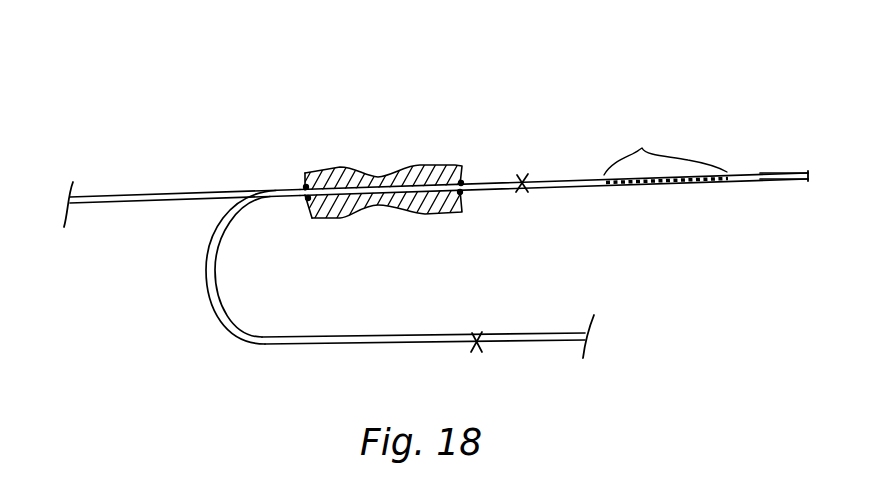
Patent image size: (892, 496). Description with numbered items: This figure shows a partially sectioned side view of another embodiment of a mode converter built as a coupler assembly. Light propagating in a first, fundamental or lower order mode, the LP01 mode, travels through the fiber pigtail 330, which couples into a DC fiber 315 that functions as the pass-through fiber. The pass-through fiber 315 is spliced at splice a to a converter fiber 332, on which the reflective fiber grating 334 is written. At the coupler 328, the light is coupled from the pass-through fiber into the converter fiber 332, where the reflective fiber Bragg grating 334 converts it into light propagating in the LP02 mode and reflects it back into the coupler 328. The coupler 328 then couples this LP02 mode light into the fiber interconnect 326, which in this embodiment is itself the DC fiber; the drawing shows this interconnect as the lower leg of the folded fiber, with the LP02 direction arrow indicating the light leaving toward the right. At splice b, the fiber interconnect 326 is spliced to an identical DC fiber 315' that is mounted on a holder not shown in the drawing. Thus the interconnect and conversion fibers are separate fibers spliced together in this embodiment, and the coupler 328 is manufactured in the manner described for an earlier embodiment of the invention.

The fiber pigtail 330 is at (144, 196).
The DC fiber 315 is at (507, 238).
The DC fiber 315' is at (573, 318).
The coupler 328 is at (377, 168).
The reflective fiber grating 334 is at (642, 148).
The converter fiber 332 is at (755, 181).
The fiber interconnect 326 is at (226, 340).
The splice a is at (521, 193).
The splice b is at (474, 352).
The LP01 mode LP01 is at (128, 211).
The LP02 mode LP02 is at (420, 352).